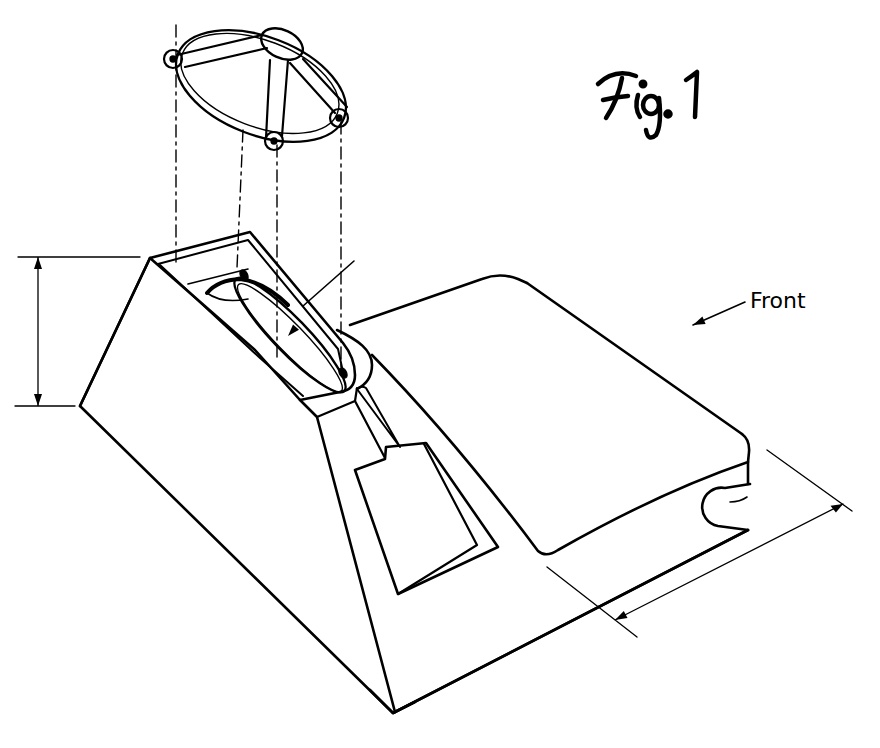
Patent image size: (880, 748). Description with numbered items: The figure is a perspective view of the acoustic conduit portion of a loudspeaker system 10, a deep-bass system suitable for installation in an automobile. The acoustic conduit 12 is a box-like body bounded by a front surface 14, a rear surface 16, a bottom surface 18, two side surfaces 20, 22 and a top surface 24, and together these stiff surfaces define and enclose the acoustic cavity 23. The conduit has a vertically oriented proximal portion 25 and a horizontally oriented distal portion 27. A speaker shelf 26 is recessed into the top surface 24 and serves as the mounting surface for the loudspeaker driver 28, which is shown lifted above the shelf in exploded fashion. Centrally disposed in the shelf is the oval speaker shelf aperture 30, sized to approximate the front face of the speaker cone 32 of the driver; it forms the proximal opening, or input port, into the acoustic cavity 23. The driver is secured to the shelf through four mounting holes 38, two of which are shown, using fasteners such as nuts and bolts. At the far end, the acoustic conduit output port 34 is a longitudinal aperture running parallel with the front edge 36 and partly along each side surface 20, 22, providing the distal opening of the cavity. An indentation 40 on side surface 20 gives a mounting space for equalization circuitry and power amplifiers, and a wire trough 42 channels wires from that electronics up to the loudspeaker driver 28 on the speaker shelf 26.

The loudspeaker system 10 is at (478, 213).
The acoustic conduit 12 is at (288, 573).
The front surface 14 is at (290, 293).
The rear surface 16 is at (177, 482).
The bottom surface 18 is at (546, 638).
The side surface 20 is at (397, 668).
The side surface 22 is at (205, 252).
The acoustic cavity 23 is at (337, 290).
The top surface 24 is at (388, 377).
The proximal portion 25 is at (38, 335).
The speaker shelf 26 is at (237, 242).
The distal portion 27 is at (720, 566).
The loudspeaker driver 28 is at (308, 80).
The speaker shelf aperture 30 is at (265, 335).
The speaker cone 32 is at (243, 78).
The acoustic conduit output port 34 is at (745, 495).
The front edge 36 is at (676, 378).
The mounting holes 38 is at (214, 310).
The indentation 40 is at (430, 554).
The wire trough 42 is at (385, 425).